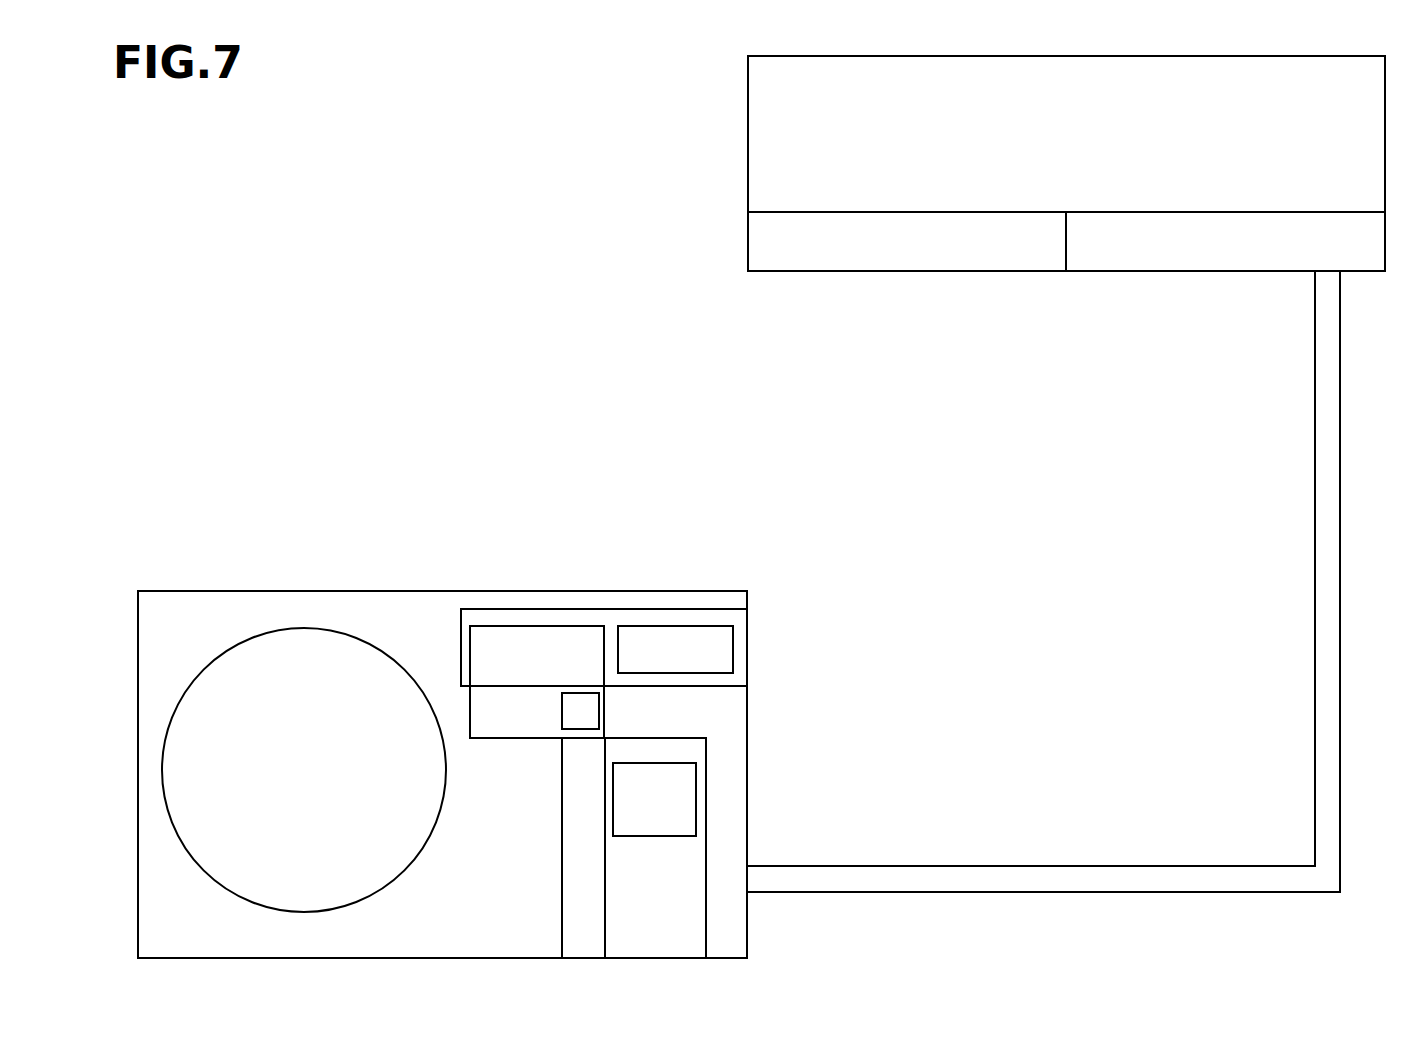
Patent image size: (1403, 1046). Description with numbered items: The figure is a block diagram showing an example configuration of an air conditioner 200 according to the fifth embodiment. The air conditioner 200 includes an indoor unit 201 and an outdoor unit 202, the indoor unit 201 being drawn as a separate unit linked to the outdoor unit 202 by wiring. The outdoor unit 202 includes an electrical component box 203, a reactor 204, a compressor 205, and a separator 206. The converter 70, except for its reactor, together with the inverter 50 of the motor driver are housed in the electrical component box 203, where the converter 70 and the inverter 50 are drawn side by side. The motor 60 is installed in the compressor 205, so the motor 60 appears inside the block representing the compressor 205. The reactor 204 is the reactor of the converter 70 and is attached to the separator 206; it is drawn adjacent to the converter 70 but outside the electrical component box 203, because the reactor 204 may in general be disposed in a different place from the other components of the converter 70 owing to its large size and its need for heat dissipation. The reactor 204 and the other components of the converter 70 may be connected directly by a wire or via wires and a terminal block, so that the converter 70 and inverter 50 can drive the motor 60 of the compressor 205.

The air conditioner 200 is at (453, 108).
The indoor unit 201 is at (748, 157).
The outdoor unit 202 is at (305, 627).
The electrical component box 203 is at (483, 609).
The converter 70 is at (535, 625).
The inverter 50 is at (670, 625).
The reactor 204 is at (604, 708).
The compressor 205 is at (707, 931).
The separator 206 is at (563, 930).
The motor 60 is at (647, 836).